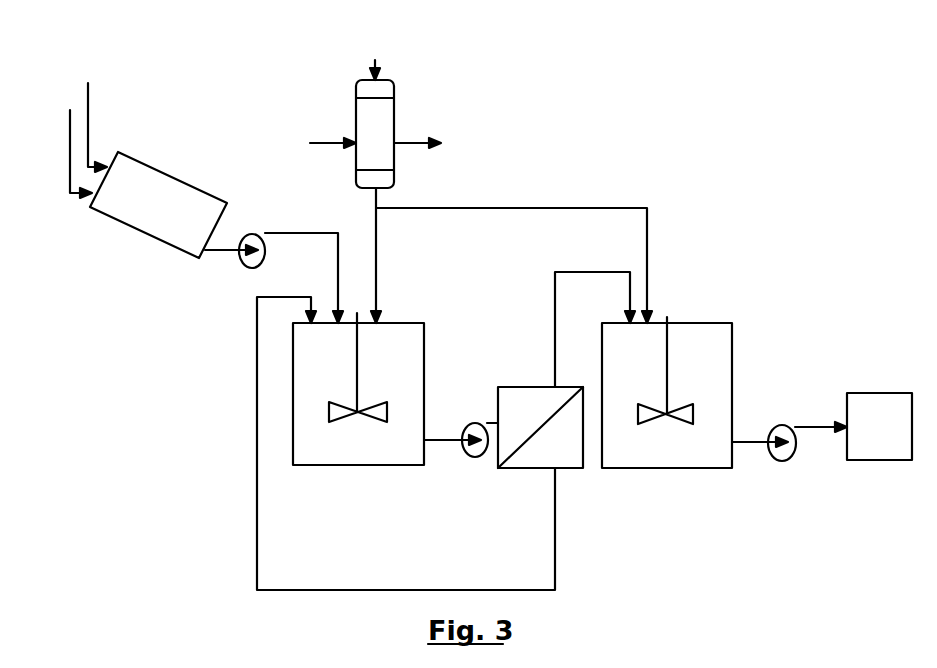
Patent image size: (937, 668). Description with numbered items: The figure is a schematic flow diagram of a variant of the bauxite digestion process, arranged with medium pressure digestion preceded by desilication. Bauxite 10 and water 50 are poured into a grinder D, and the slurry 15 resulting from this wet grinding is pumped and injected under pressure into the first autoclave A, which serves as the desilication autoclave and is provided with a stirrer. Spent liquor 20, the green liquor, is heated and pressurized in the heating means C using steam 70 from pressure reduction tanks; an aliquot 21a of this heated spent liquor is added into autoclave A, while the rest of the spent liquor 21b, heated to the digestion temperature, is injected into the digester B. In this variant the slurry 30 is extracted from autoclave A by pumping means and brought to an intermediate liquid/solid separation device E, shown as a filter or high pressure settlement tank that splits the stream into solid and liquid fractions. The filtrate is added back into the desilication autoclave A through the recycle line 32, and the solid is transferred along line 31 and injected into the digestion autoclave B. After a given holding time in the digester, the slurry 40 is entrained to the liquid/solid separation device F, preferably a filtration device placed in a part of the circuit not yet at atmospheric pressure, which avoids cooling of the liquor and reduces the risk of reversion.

The first autoclave A is at (353, 428).
The digester B is at (668, 430).
The heating means C is at (382, 137).
The grinder D is at (150, 208).
The solid/liquid separator E is at (525, 455).
The liquid/solid separation device F is at (879, 426).
The bauxite 10 is at (113, 116).
The water 50 is at (56, 141).
The slurry 15 is at (274, 258).
The spent liquor 20 is at (369, 47).
The steam 70 is at (368, 127).
The aliquot of the spent liquor 21a is at (411, 255).
The rest of the spent liquor 21b is at (555, 265).
The slurry 30 is at (461, 451).
The solid fraction line to second reactor 31 is at (566, 329).
The liquid recycle line to first reactor 32 is at (361, 443).
The slurry 40 is at (789, 426).